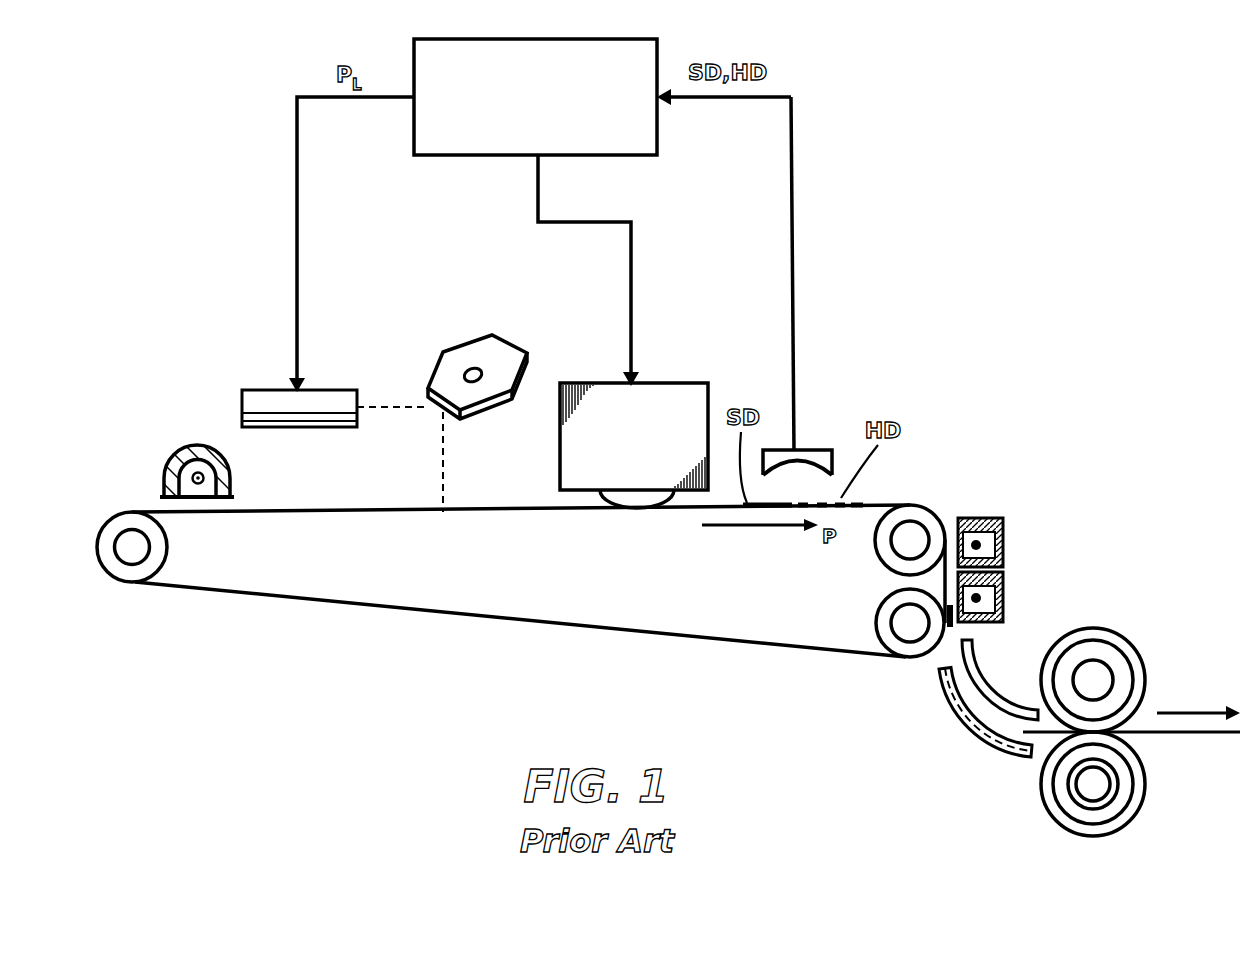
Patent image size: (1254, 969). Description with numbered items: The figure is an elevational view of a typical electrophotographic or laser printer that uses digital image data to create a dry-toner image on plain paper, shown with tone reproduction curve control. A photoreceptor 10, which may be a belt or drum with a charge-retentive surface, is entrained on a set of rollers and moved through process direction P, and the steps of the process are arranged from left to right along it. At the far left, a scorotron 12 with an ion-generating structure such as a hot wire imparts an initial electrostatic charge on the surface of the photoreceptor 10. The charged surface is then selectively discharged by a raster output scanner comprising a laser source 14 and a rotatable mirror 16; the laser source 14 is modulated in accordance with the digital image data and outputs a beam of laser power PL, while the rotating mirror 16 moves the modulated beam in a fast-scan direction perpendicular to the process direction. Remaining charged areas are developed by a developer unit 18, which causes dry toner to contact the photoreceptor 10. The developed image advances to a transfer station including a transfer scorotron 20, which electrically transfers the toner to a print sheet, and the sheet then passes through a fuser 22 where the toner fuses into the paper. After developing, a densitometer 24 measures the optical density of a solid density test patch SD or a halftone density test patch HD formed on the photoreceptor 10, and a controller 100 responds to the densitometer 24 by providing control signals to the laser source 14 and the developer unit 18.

The controller 100 is at (505, 103).
The photoreceptor 10 is at (532, 622).
The scorotron 12 is at (199, 445).
The laser source 14 is at (258, 388).
The rotatable mirror 16 is at (462, 344).
The developer unit 18 is at (673, 382).
The transfer scorotron 20 is at (1010, 560).
The fuser 22 is at (1102, 628).
The densitometer 24 is at (813, 450).